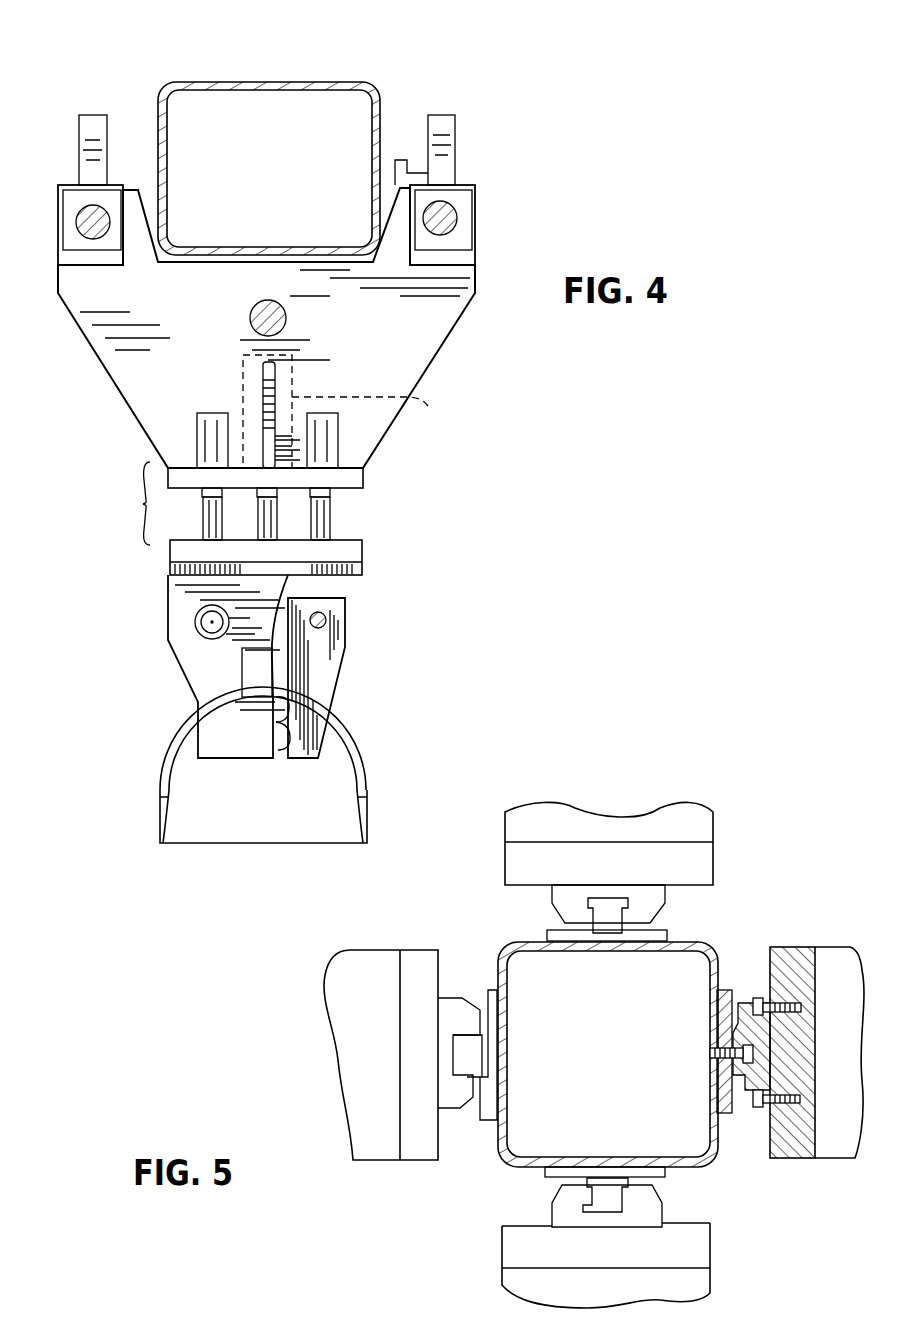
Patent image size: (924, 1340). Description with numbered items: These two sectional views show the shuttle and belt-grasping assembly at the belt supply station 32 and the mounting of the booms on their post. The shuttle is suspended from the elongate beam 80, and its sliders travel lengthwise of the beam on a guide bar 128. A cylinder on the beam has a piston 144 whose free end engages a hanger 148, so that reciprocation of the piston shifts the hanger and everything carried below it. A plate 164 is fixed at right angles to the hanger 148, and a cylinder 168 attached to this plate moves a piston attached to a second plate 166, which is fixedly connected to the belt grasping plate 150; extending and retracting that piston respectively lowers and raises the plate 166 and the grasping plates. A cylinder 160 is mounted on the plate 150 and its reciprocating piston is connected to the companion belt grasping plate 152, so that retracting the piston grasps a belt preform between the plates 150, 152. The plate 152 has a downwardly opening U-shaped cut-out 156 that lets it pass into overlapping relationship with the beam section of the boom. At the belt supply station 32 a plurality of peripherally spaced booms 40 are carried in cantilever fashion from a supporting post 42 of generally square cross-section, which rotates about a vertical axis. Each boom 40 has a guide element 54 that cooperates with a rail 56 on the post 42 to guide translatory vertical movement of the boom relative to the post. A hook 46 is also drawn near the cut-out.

In FIG. 4, the elongate beam 80 is at (295, 82).
In FIG. 4, the guide bar 128 is at (448, 218).
In FIG. 4, the hanger 148 is at (389, 319).
In FIG. 4, the piston 144 is at (284, 318).
In FIG. 4, the cylinder 168 is at (352, 411).
In FIG. 4, the plate 164 is at (348, 477).
In FIG. 4, the second plate 166 is at (350, 548).
In FIG. 4, the belt grasping plate 150 is at (205, 678).
In FIG. 4, the cylinder 160 is at (248, 682).
In FIG. 4, the belt grasping plate 152 is at (327, 658).
In FIG. 4, the hook 46 is at (322, 712).
In FIG. 4, the U-shaped cut-out 156 is at (277, 743).
In FIG. 4, the boom 40 is at (360, 775).
In FIG. 5, the boom 40 is at (698, 836).
In FIG. 5, the belt supply station 32 is at (755, 893).
In FIG. 5, the supporting post 42 is at (498, 1162).
In FIG. 5, the guide element 54 is at (447, 1007).
In FIG. 5, the rail 56 is at (473, 1050).